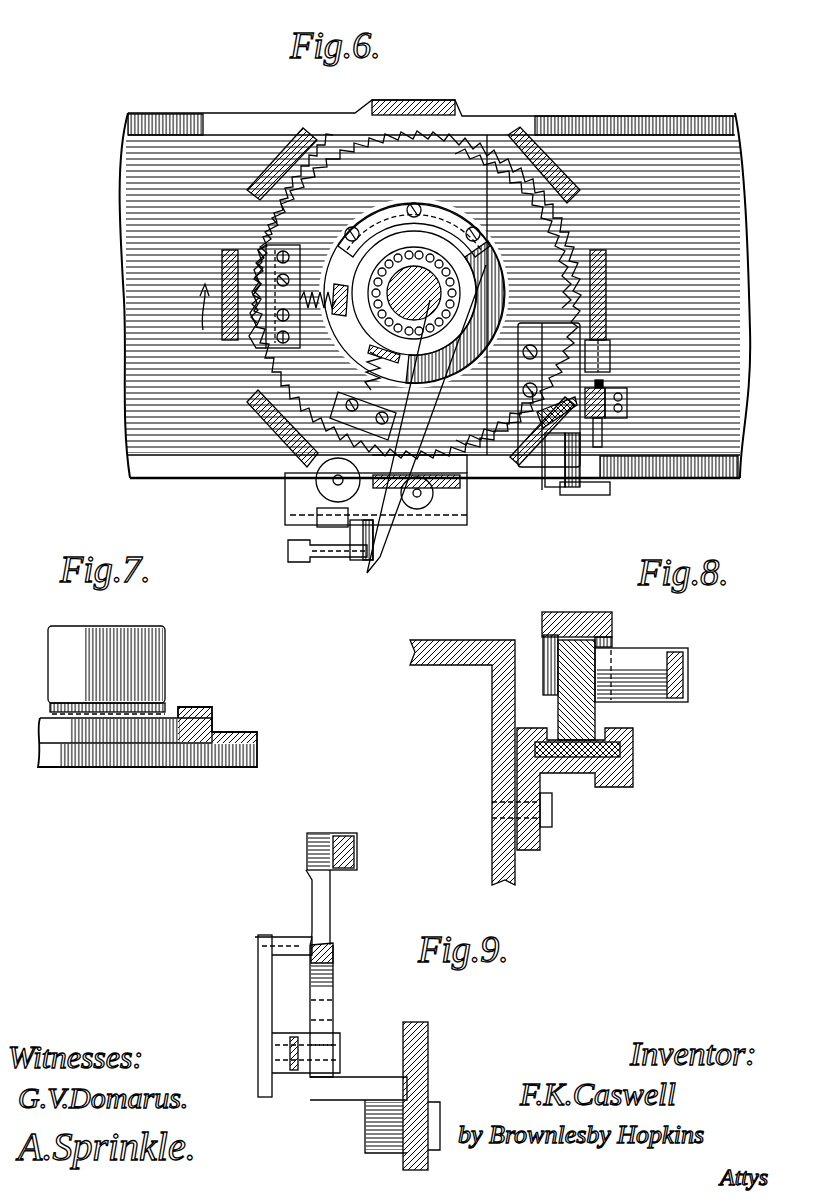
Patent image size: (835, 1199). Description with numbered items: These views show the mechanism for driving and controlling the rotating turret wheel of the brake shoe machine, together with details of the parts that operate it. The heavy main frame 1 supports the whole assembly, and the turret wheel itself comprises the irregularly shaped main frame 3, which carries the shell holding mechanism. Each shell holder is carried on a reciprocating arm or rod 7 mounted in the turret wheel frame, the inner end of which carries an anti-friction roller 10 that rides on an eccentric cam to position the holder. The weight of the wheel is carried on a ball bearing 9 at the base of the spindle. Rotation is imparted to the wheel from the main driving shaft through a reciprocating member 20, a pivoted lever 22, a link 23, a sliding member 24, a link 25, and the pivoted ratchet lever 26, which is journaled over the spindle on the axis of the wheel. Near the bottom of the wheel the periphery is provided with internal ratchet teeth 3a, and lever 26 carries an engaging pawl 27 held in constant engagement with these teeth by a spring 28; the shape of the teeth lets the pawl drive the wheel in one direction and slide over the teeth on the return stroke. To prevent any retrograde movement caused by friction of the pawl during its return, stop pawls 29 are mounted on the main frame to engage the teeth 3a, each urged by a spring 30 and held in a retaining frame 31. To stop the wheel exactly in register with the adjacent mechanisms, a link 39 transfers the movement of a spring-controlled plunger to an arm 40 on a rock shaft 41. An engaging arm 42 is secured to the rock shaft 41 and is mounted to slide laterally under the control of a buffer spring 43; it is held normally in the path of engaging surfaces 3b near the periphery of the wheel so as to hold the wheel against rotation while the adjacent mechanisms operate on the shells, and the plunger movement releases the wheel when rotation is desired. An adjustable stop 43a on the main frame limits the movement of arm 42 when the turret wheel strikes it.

In FIG. 6, the main frame 1 is at (140, 208).
In FIG. 7, the main frame 1 is at (135, 760).
In FIG. 8, the main frame 1 is at (496, 712).
In FIG. 9, the main frame 1 is at (430, 1026).
In FIG. 7, the main frame of the turret wheel 3 is at (150, 650).
In FIG. 6, the internal ratchet teeth 3a is at (500, 168).
In FIG. 6, the engaging surfaces 3b is at (582, 196).
In FIG. 6, the reciprocating arm or rod 7 is at (436, 205).
In FIG. 6, the ball bearing 9 is at (455, 293).
In FIG. 7, the ball bearing 9 is at (48, 718).
In FIG. 6, the anti-friction rollers 10 is at (380, 560).
In FIG. 9, the reciprocating member 20 is at (290, 1040).
In FIG. 9, the pivoted lever 22 is at (320, 893).
In FIG. 6, the link 23 is at (330, 548).
In FIG. 8, the link 23 is at (690, 650).
In FIG. 9, the link 23 is at (358, 845).
In FIG. 8, the sliding member 24 is at (568, 655).
In FIG. 6, the link 25 is at (352, 510).
In FIG. 8, the link 25 is at (580, 622).
In FIG. 6, the pivoted ratchet lever 26 is at (350, 378).
In FIG. 7, the pivoted ratchet lever 26 is at (68, 735).
In FIG. 6, the engaging pawl 27 is at (320, 475).
In FIG. 6, the spring 28 is at (275, 418).
In FIG. 6, the stop pawls 29 is at (258, 275).
In FIG. 6, the spring 30 is at (312, 290).
In FIG. 6, the retaining frame 31 is at (365, 352).
In FIG. 6, the link 39 is at (588, 495).
In FIG. 6, the arm 40 is at (548, 478).
In FIG. 6, the rock shaft 41 is at (585, 440).
In FIG. 6, the engaging arm 42 is at (605, 355).
In FIG. 6, the buffer spring 43 is at (604, 430).
In FIG. 6, the adjustable stop 43a is at (603, 384).